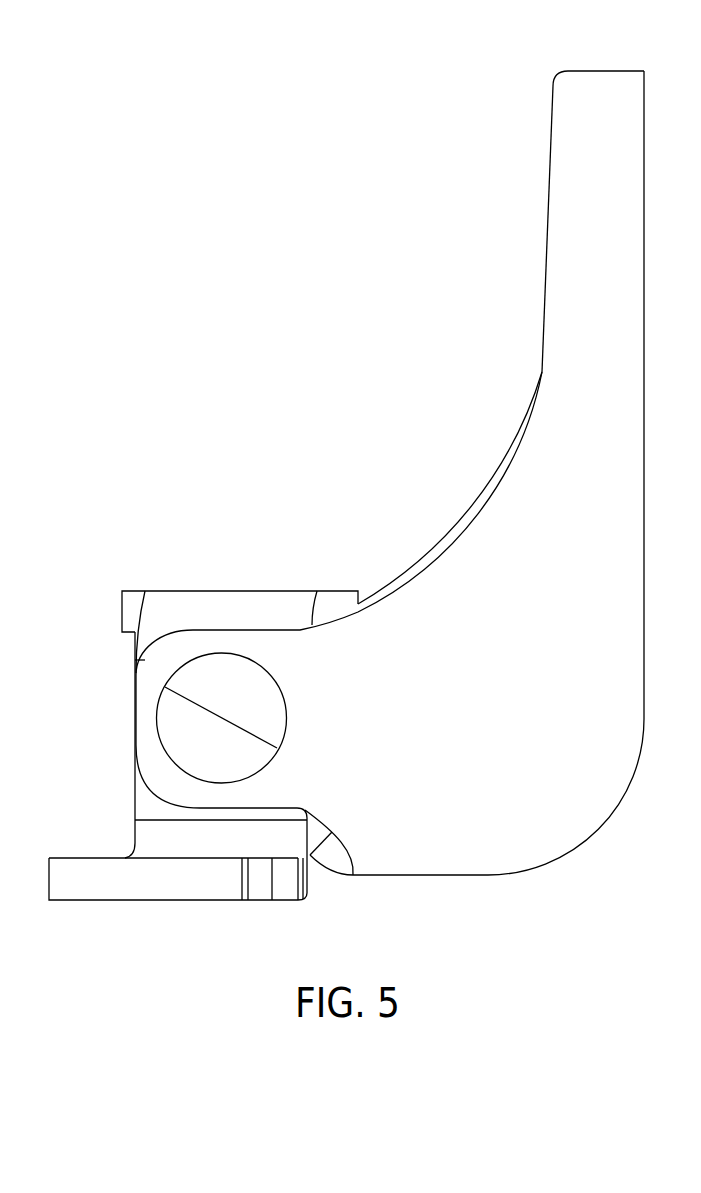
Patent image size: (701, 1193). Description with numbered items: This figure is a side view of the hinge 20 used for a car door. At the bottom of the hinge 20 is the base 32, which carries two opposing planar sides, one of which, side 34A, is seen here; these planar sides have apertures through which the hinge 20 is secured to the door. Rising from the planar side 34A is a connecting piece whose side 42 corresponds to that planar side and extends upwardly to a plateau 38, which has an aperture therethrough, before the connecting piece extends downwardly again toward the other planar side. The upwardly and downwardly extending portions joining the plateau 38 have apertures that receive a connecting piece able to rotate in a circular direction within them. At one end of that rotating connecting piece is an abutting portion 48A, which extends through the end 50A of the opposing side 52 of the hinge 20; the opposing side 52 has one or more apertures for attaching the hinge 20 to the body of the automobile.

The hinge 20 is at (379, 148).
The opposing side 52 is at (601, 84).
The end of the opposing side 50A is at (513, 735).
The plateau 38 is at (273, 606).
The abutting portion 48A is at (188, 698).
The side of the connecting piece 42 is at (140, 795).
The opposing planar side 34A is at (75, 868).
The base 32 is at (142, 892).